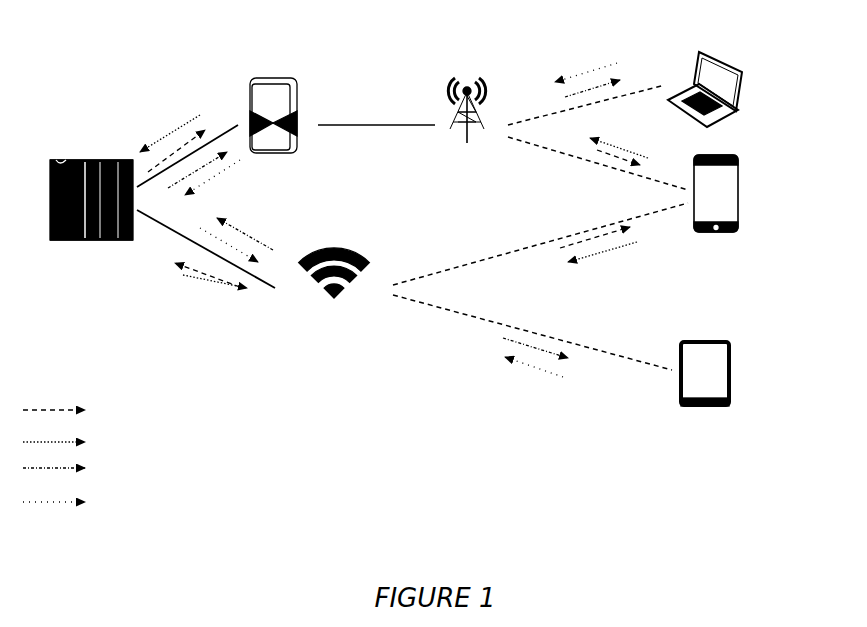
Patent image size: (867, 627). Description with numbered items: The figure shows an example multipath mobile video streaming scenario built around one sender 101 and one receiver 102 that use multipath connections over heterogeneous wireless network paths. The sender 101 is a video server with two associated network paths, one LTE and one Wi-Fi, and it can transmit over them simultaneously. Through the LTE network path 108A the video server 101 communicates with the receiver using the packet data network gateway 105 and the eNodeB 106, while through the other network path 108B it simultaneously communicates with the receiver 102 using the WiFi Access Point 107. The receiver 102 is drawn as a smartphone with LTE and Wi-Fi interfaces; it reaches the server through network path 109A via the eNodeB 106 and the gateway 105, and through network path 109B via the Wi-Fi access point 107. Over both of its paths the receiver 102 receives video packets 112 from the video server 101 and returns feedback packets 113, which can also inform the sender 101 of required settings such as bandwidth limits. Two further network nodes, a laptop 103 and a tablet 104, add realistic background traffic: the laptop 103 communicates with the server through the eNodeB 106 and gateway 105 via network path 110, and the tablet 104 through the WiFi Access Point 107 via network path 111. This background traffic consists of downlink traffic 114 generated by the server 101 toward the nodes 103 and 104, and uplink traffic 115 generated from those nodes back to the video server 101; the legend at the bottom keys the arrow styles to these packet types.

The sender 101 is at (66, 156).
The receiver 102 is at (742, 166).
The network node 103 is at (733, 62).
The network node 104 is at (740, 343).
The packet data network gateway 105 is at (293, 77).
The eNodeB 106 is at (437, 86).
The WiFi Access Point 107 is at (363, 249).
The LTE network path 108A is at (232, 125).
The network path 108B is at (177, 228).
The network path 109A is at (550, 148).
The network path 109B is at (680, 203).
The network path 110 is at (636, 92).
The network path 111 is at (640, 362).
The video packets 112 is at (185, 410).
The feedback packets 113 is at (208, 446).
The downlink traffic 114 is at (283, 468).
The uplink traffic 115 is at (258, 504).